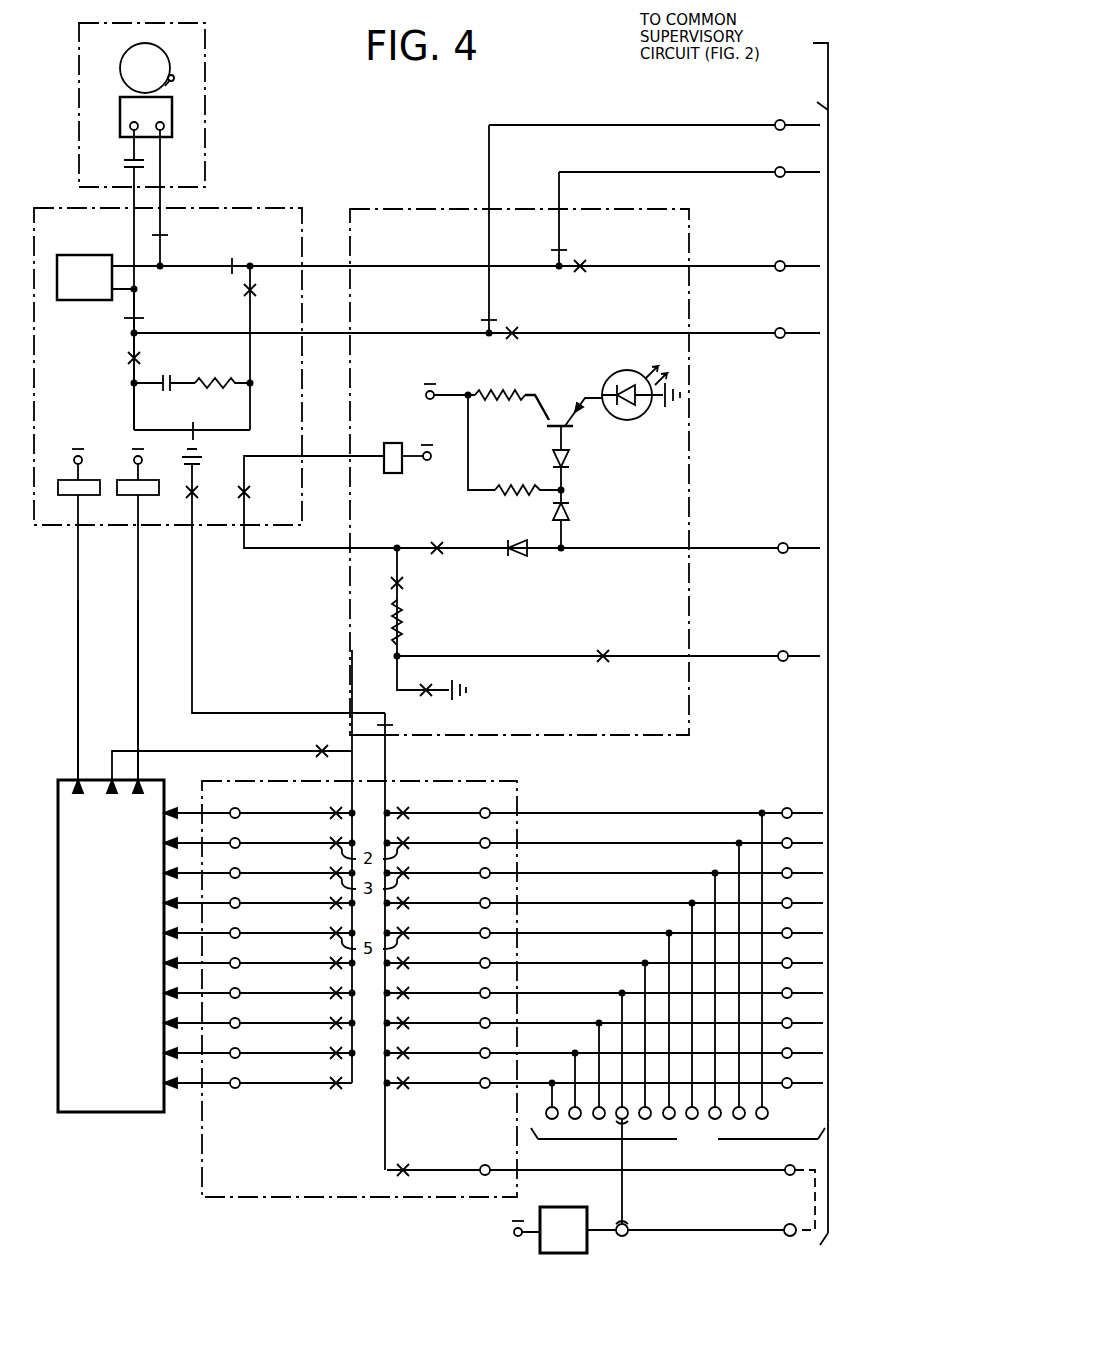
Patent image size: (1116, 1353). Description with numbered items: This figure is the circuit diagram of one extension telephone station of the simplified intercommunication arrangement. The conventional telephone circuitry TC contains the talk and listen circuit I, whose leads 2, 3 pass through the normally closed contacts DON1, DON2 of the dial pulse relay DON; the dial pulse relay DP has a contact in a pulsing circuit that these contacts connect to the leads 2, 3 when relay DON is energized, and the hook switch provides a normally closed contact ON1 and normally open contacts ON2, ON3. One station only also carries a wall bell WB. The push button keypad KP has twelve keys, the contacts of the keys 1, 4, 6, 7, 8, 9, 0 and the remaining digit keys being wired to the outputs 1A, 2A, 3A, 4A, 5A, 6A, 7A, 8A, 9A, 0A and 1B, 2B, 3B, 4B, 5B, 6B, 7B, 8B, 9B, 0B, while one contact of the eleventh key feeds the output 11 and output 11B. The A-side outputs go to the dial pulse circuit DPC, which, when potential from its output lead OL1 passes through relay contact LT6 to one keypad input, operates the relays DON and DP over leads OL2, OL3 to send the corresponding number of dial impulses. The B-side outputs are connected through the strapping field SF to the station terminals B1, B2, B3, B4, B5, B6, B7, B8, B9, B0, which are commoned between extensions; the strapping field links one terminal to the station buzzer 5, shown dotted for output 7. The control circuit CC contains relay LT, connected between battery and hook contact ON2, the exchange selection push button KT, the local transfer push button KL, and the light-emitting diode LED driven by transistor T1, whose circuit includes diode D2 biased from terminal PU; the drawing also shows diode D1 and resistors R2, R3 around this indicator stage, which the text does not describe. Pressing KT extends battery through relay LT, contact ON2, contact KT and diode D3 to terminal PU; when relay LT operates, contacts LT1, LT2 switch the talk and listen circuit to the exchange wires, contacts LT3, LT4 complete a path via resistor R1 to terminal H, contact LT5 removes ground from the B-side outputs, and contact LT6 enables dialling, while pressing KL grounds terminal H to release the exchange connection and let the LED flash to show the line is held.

The wall bell WB is at (205, 90).
The telephone circuitry TC is at (55, 522).
The talk and listen circuit I is at (84, 277).
The hook switch contact ON1 is at (168, 240).
The lead 2 is at (322, 260).
The lead 3 is at (322, 328).
The relay contact DON1 is at (244, 290).
The relay contact DON2 is at (127, 333).
The dial pulse relay DP is at (198, 428).
The dial pulse relay DON is at (96, 497).
The hook switch contact ON3 is at (199, 490).
The hook switch contact ON2 is at (251, 490).
The relay LT is at (395, 476).
The control circuit CC is at (689, 462).
The relay contact LT1 is at (570, 259).
The relay contact LT2 is at (499, 328).
The resistor R3 is at (498, 389).
The transistor T1 is at (554, 408).
The light-emitting diode LED is at (622, 373).
The diode D1 is at (571, 461).
The resistor R2 is at (518, 486).
The diode D2 is at (571, 509).
The terminal PU is at (792, 529).
The push button switch KT is at (445, 539).
The diode D3 is at (516, 539).
The relay contact LT3 is at (406, 584).
The resistor R1 is at (410, 631).
The terminal H is at (783, 651).
The relay contact LT4 is at (604, 649).
The push button switch KL is at (422, 689).
The relay contact LT5 is at (394, 727).
The output lead OL1 is at (230, 739).
The relay contact LT6 is at (330, 737).
The output lead OL2 is at (80, 706).
The output lead OL3 is at (140, 738).
The dial pulse circuit DPC is at (104, 1108).
The push button keypad KP is at (352, 1200).
The keypad output 1A is at (239, 809).
The keypad output 2A is at (239, 839).
The keypad output 3A is at (239, 869).
The keypad output 4A is at (239, 899).
The keypad output 5A is at (239, 929).
The keypad output 6A is at (239, 959).
The keypad output 7A is at (239, 989).
The keypad output 8A is at (239, 1019).
The keypad output 9A is at (239, 1049).
The keypad output 0A is at (239, 1079).
The keypad output 1B is at (483, 810).
The keypad output 2B is at (483, 840).
The keypad output 3B is at (483, 870).
The keypad output 4B is at (483, 900).
The keypad output 5B is at (483, 930).
The keypad output 6B is at (483, 960).
The keypad output 7B is at (483, 990).
The keypad output 8B is at (483, 1020).
The keypad output 9B is at (483, 1050).
The keypad output 0B is at (483, 1080).
The keypad key 1 is at (342, 819).
The keypad key 4 is at (342, 909).
The buzzer 5 is at (654, 1230).
The keypad key 6 is at (342, 969).
The keypad key 7 is at (342, 999).
The keypad key 8 is at (342, 1029).
The keypad key 9 is at (342, 1059).
The keypad key 0 is at (342, 1089).
The output terminal B1 is at (791, 808).
The output terminal B2 is at (791, 838).
The output terminal B3 is at (791, 868).
The output terminal B4 is at (791, 898).
The output terminal B5 is at (791, 928).
The output terminal B6 is at (791, 958).
The output terminal B7 is at (791, 988).
The output terminal B8 is at (791, 1018).
The output terminal B9 is at (791, 1048).
The output terminal B0 is at (791, 1078).
The strapping field SF is at (678, 1018).
The keypad output 11 is at (390, 1173).
The keypad output 11B is at (484, 1174).